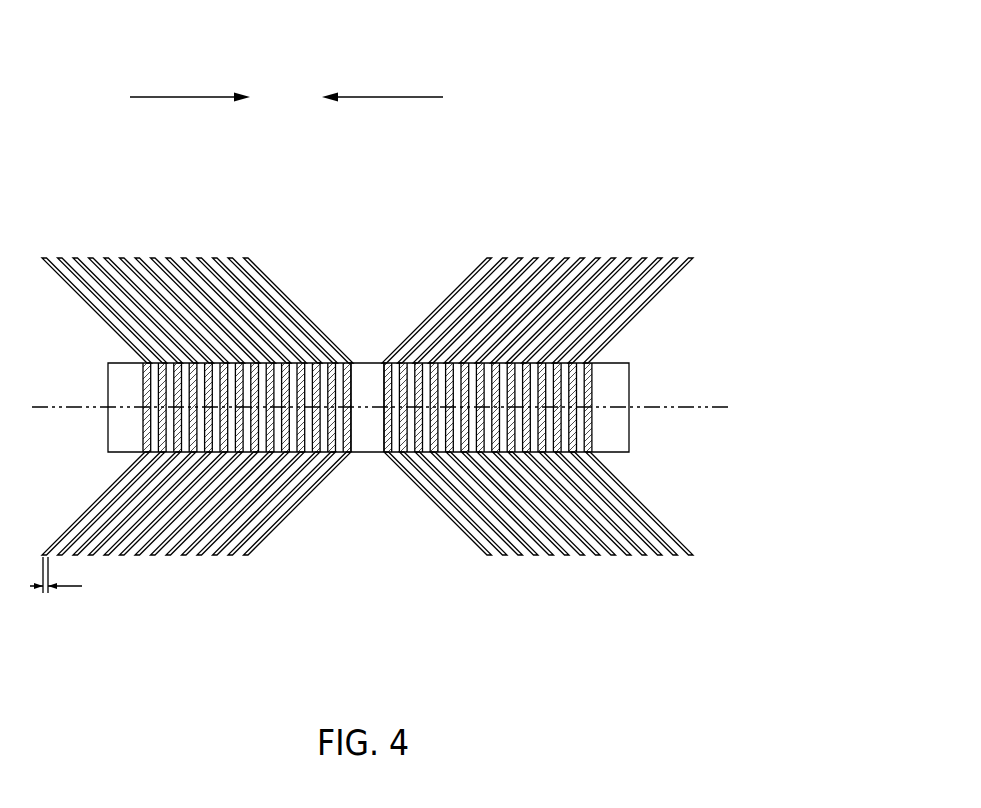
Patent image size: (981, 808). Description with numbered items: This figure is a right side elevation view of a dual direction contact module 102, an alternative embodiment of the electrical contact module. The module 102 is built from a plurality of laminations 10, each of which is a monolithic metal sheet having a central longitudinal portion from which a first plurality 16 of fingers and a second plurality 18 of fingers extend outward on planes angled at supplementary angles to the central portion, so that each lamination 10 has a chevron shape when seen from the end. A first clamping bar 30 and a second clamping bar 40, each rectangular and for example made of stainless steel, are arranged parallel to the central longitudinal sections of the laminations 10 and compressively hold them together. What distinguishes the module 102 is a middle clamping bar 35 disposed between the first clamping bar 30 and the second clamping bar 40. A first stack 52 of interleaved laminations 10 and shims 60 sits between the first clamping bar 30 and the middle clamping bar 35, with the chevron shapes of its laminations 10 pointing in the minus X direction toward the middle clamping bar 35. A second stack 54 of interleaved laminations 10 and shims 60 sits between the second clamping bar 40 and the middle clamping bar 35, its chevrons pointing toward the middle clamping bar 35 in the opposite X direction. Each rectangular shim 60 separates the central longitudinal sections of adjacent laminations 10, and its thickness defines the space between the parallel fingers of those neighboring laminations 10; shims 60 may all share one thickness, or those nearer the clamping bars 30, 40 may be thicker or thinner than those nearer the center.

The dual direction contact module 102 is at (566, 71).
The first stack 52 is at (121, 238).
The second stack 54 is at (560, 230).
The first plurality of fingers 16 is at (285, 297).
The second plurality of fingers 18 is at (263, 542).
The lamination 10 is at (593, 557).
The first clamping bar 30 is at (120, 382).
The second clamping bar 40 is at (617, 383).
The middle clamping bar 35 is at (363, 377).
The shim 60 is at (322, 440).